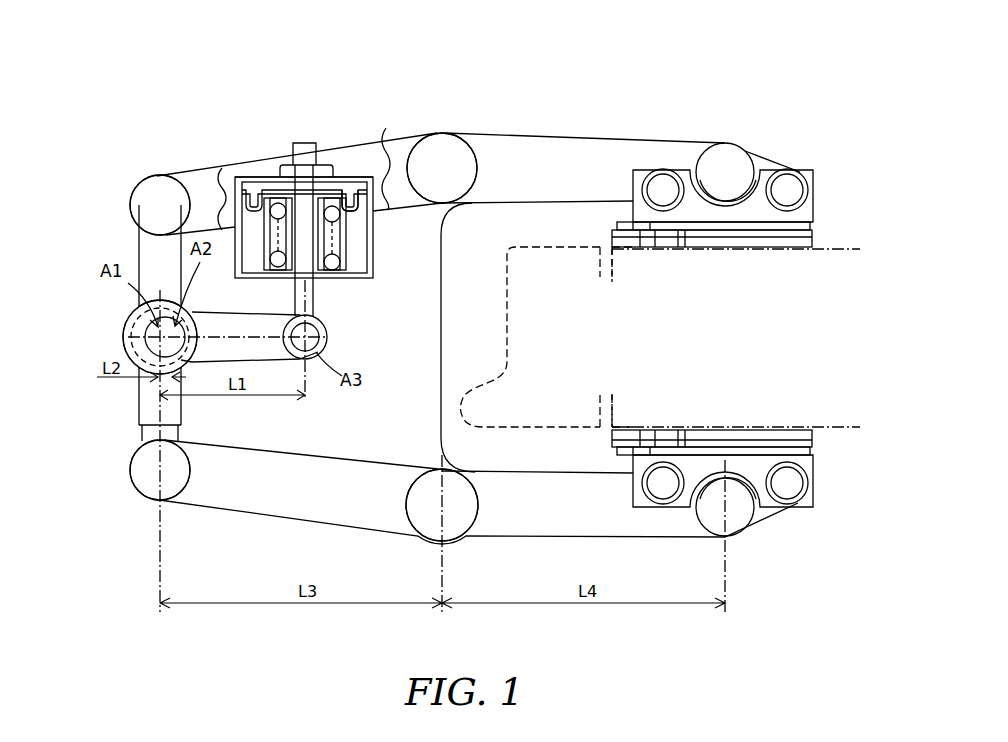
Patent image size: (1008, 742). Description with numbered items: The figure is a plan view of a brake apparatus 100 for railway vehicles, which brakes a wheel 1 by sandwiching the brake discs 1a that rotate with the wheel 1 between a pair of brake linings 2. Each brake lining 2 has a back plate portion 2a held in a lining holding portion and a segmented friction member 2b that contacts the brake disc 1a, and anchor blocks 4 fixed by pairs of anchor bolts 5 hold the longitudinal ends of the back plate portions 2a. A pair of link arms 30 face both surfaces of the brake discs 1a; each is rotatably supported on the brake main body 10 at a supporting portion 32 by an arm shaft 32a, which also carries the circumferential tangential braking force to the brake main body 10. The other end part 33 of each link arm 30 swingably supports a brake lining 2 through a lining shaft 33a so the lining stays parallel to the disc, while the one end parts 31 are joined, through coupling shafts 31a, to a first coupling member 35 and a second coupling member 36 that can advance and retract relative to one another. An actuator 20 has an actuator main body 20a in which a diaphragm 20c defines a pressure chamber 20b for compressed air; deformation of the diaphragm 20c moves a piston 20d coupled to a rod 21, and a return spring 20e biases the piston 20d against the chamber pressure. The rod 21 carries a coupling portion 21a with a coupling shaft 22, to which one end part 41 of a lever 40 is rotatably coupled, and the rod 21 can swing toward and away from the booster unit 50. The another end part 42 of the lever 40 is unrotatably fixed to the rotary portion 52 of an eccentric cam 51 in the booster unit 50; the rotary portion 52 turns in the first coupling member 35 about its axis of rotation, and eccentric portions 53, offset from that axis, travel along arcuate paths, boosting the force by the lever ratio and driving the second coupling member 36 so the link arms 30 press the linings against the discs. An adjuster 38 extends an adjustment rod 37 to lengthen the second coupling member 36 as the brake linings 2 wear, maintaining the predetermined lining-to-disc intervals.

The brake apparatus 100 is at (821, 86).
The wheel 1 is at (830, 293).
The brake disc 1a is at (830, 248).
The brake lining 2 is at (766, 254).
The back plate portion 2a is at (680, 248).
The friction member 2b is at (722, 246).
The anchor block 4 is at (654, 170).
The anchor bolt 5 is at (666, 185).
The brake main body 10 is at (428, 252).
The actuator 20 is at (284, 138).
The actuator main body 20a is at (243, 186).
The pressure chamber 20b is at (258, 190).
The diaphragm 20c is at (338, 196).
The piston 20d is at (306, 166).
The return spring 20e is at (330, 268).
The rod 21 is at (295, 298).
The coupling portion 21a is at (320, 332).
The coupling shaft 22 is at (326, 338).
The link arm 30 is at (588, 134).
The one end part 31 is at (160, 185).
The coupling shaft 31a is at (157, 208).
The supporting portion 32 is at (443, 160).
The arm shaft 32a is at (440, 170).
The other end part 33 is at (722, 165).
The lining shaft 33a is at (740, 180).
The first coupling member 35 is at (150, 247).
The second coupling member 36 is at (150, 396).
The adjustment rod 37 is at (142, 440).
The adjuster 38 is at (130, 430).
The lever 40 is at (240, 350).
The one end part 41 is at (310, 360).
The another end part 42 is at (185, 366).
The booster unit 50 is at (117, 317).
The eccentric cam 51 is at (126, 344).
The rotary portion 52 is at (126, 332).
The eccentric portion 53 is at (188, 324).